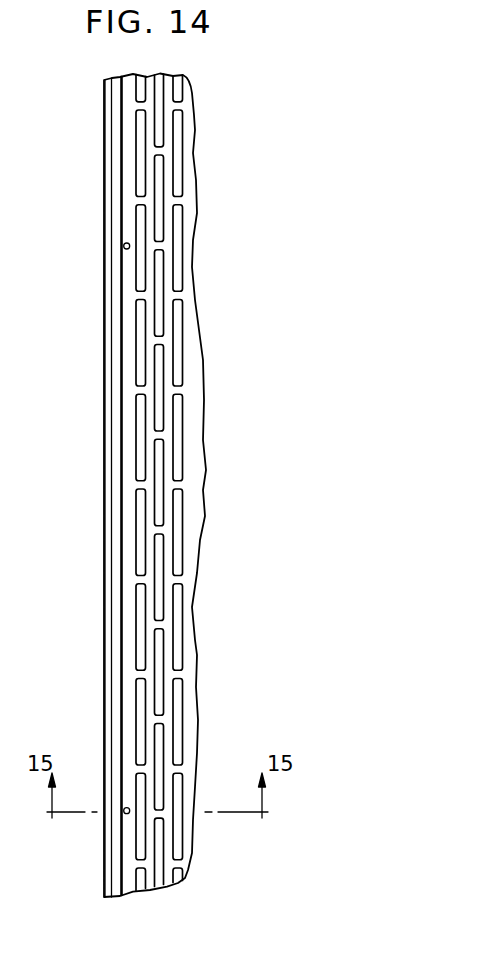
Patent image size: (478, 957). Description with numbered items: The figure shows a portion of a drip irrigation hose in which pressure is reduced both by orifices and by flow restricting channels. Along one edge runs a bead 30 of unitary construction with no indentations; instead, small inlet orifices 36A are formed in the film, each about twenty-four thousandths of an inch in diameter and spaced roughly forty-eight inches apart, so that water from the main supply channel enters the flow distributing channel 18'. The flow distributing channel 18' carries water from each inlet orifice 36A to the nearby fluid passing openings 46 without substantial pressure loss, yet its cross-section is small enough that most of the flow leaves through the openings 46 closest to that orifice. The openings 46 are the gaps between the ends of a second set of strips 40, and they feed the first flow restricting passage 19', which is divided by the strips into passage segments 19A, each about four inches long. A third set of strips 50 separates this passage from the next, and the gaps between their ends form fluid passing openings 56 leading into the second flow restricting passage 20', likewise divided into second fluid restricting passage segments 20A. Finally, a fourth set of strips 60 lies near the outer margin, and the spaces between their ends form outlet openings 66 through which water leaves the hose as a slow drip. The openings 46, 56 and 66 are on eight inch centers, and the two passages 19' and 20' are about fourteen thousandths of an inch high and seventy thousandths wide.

The flow distributing channel 18' is at (125, 486).
The first flow restricting passage 19' is at (127, 70).
The flow restricting passage 20' is at (191, 97).
The bead 30 is at (118, 200).
The inlet orifice 36A is at (125, 249).
The second set of strips 40 is at (142, 147).
The fluid passing openings 46 is at (138, 297).
The third set of strips 50 is at (158, 195).
The fluid passing openings 56 is at (158, 245).
The fourth set of strips 60 is at (178, 162).
The outlet openings 66 is at (178, 105).
The flow restricting passage segments 19A is at (150, 377).
The second fluid restricting passage segments 20A is at (167, 412).